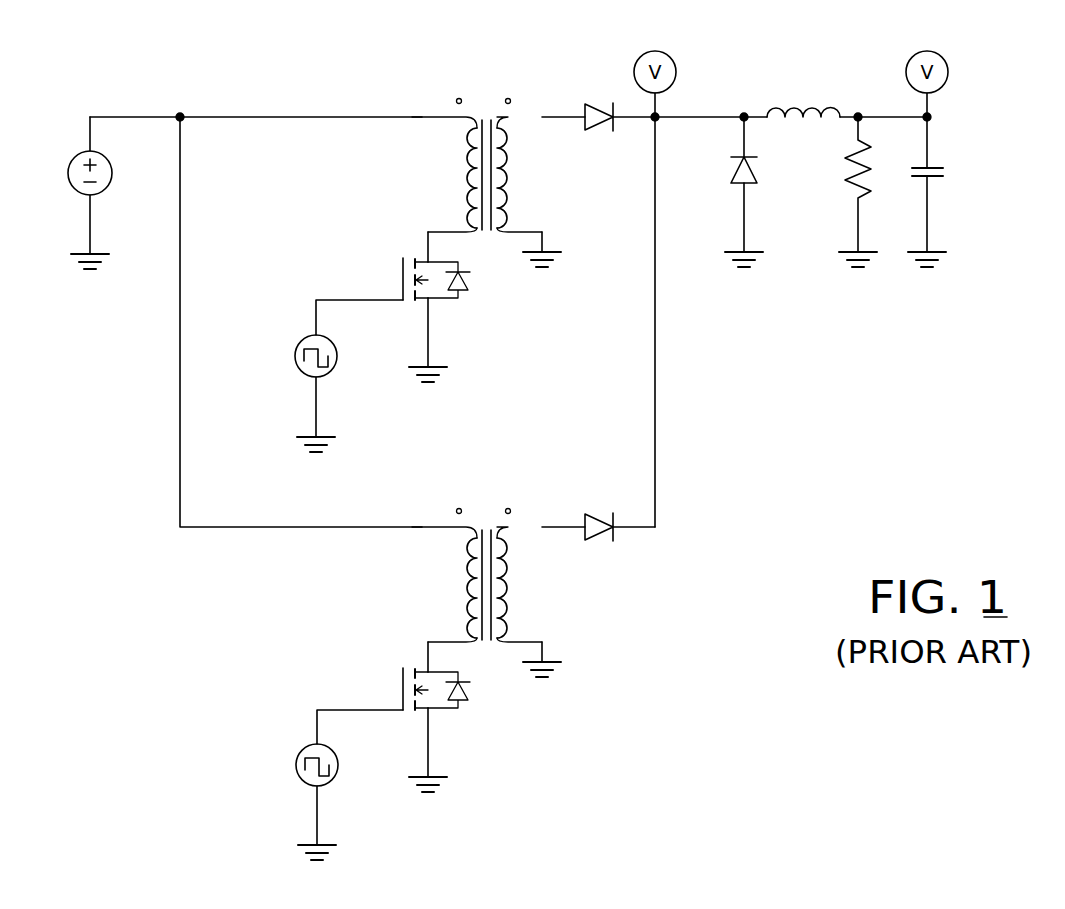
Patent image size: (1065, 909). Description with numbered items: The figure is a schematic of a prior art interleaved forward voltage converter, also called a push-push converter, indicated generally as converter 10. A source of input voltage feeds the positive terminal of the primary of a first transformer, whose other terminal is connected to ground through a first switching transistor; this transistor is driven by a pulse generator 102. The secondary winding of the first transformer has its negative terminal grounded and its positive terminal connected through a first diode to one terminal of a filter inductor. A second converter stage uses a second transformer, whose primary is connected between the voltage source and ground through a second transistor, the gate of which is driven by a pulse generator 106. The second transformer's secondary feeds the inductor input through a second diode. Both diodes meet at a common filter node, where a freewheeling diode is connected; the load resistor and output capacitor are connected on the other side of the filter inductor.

The prior art power converter circuit 10 is at (564, 451).
The pulse generator 102 is at (295, 357).
The pulse generator 106 is at (297, 766).